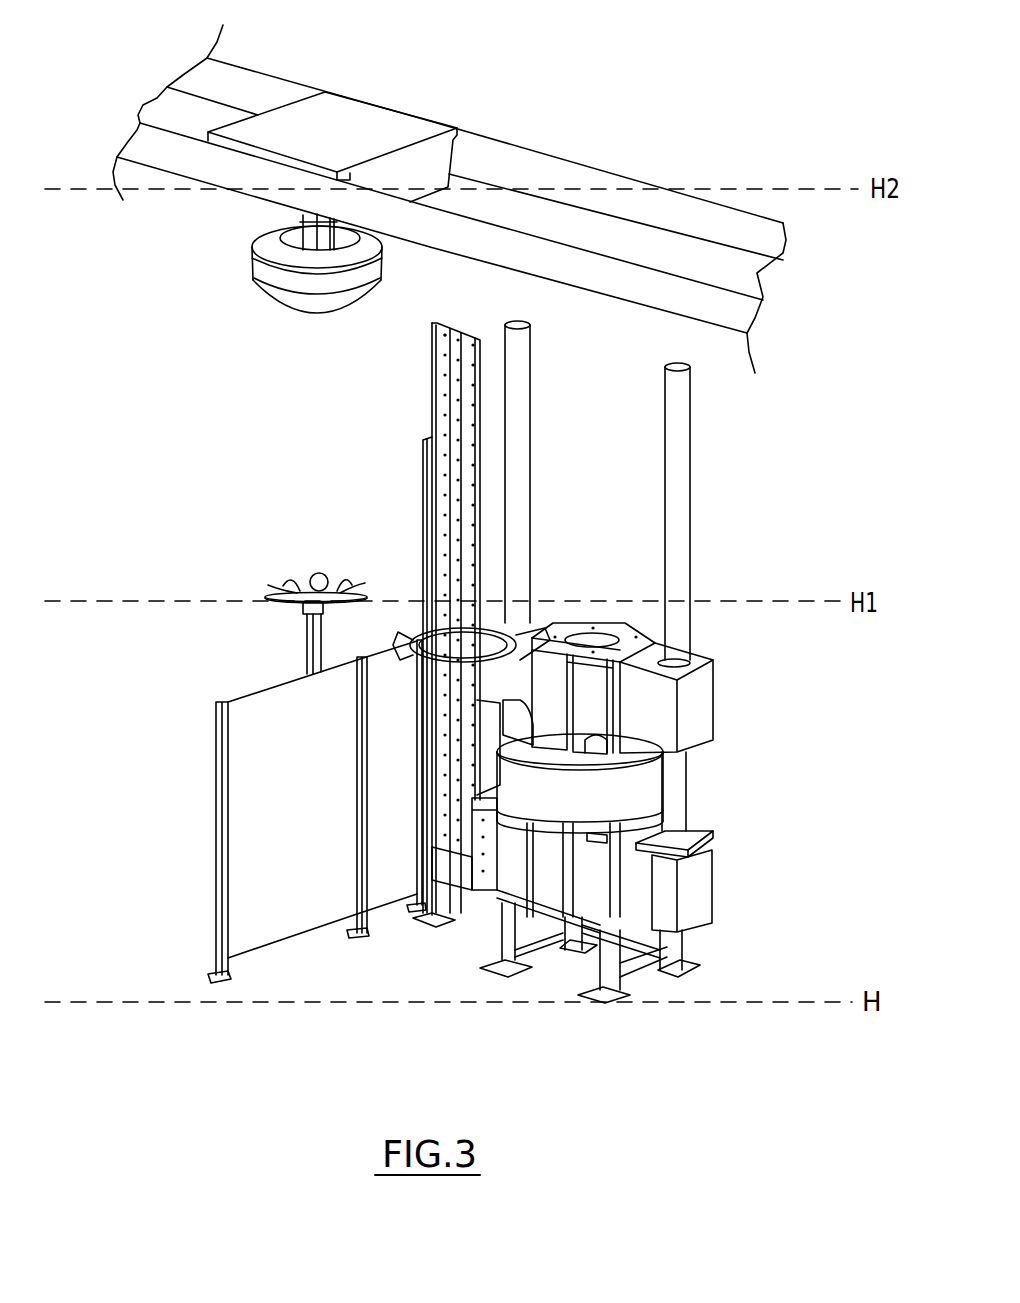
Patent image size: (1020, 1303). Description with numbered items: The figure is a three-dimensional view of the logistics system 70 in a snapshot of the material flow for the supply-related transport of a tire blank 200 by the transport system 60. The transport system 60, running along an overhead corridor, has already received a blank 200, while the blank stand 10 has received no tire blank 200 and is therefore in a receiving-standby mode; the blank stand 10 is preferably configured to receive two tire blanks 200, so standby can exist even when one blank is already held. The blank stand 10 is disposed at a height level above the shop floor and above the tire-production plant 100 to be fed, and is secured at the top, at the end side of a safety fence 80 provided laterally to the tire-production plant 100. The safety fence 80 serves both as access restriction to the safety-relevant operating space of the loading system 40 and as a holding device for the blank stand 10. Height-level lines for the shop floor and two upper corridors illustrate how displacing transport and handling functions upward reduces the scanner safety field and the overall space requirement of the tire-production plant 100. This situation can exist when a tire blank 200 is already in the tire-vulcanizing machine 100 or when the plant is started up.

The blank stand 10 is at (272, 556).
The loading system 40 is at (388, 548).
The transport system 60 is at (232, 292).
The logistics system 70 is at (622, 122).
The safety fence 80 is at (185, 755).
The tire-production plant 100 is at (728, 700).
The tire blank 200 is at (297, 285).